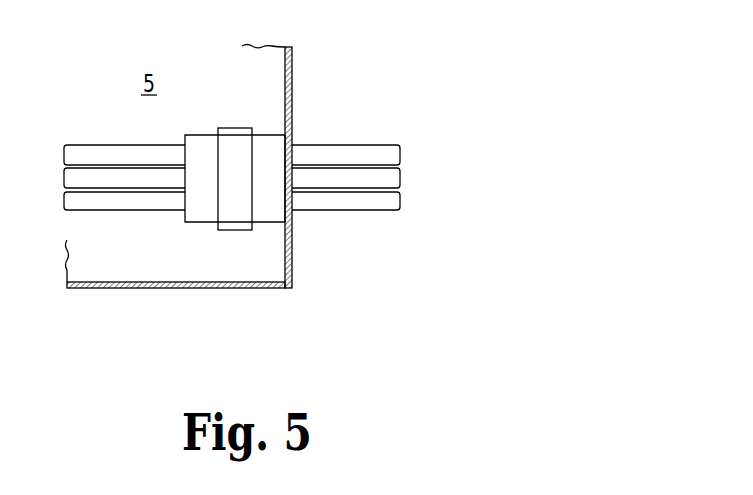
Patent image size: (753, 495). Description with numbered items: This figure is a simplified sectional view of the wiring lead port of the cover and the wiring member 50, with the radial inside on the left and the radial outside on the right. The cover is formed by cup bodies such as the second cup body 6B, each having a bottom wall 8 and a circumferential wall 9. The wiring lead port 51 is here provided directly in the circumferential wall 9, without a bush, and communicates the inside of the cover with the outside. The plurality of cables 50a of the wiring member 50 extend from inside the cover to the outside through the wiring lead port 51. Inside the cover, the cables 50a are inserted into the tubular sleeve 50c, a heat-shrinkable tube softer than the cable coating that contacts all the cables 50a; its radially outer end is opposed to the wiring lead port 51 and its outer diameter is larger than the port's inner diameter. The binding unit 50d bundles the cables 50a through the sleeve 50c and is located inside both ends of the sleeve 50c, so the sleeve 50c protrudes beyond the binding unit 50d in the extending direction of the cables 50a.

The circumferential wall 9 is at (294, 88).
The bottom wall 8 is at (176, 302).
The second cup body 6B is at (197, 291).
The wiring member 50 is at (232, 200).
The cables 50a is at (93, 172).
The sleeve 50c is at (204, 148).
The binding unit 50d is at (235, 222).
The wiring lead port 51 is at (282, 131).